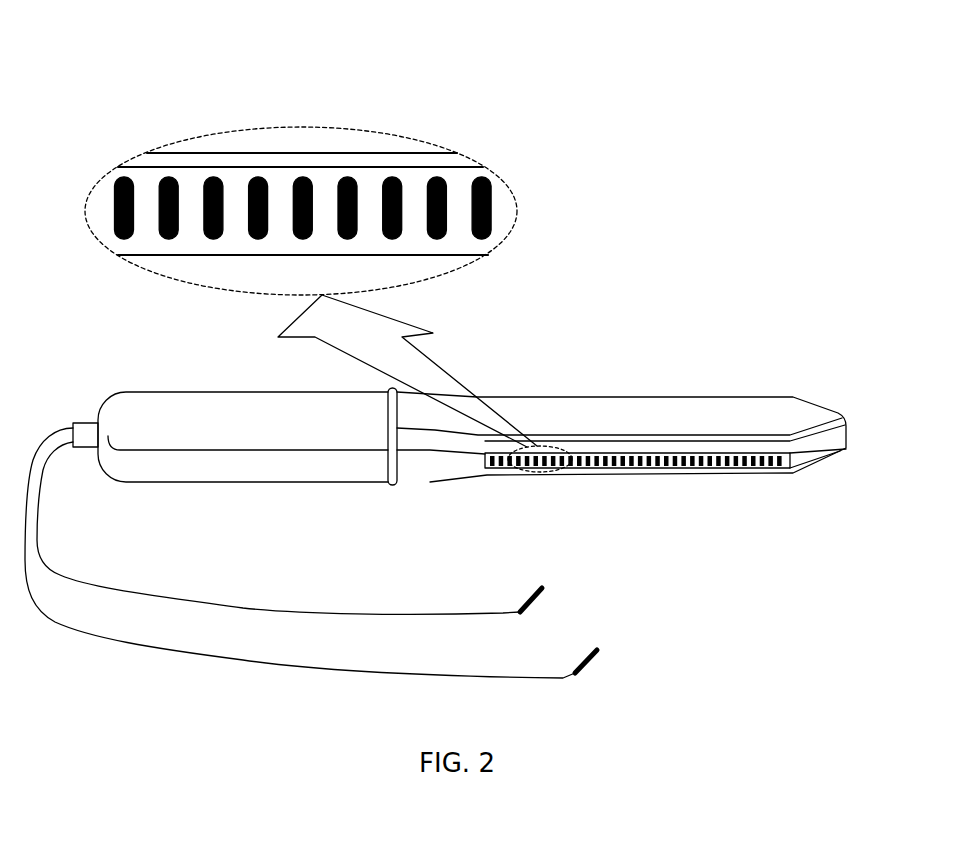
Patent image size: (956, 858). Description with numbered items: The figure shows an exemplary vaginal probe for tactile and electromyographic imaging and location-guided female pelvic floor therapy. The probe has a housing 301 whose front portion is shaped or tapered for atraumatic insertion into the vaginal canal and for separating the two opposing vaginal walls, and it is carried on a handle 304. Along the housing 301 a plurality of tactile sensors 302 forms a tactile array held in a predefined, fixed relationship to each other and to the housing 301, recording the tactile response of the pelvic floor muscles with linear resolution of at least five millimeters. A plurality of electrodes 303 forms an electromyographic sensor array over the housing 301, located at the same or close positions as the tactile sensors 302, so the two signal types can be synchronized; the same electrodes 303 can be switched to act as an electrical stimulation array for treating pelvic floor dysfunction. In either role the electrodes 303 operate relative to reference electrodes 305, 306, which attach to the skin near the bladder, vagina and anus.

The housing 301 is at (542, 415).
The tactile sensors 302 is at (238, 207).
The electrodes 303 is at (347, 177).
The handle 304 is at (222, 455).
The reference electrode 305 is at (540, 598).
The reference electrode 306 is at (595, 660).